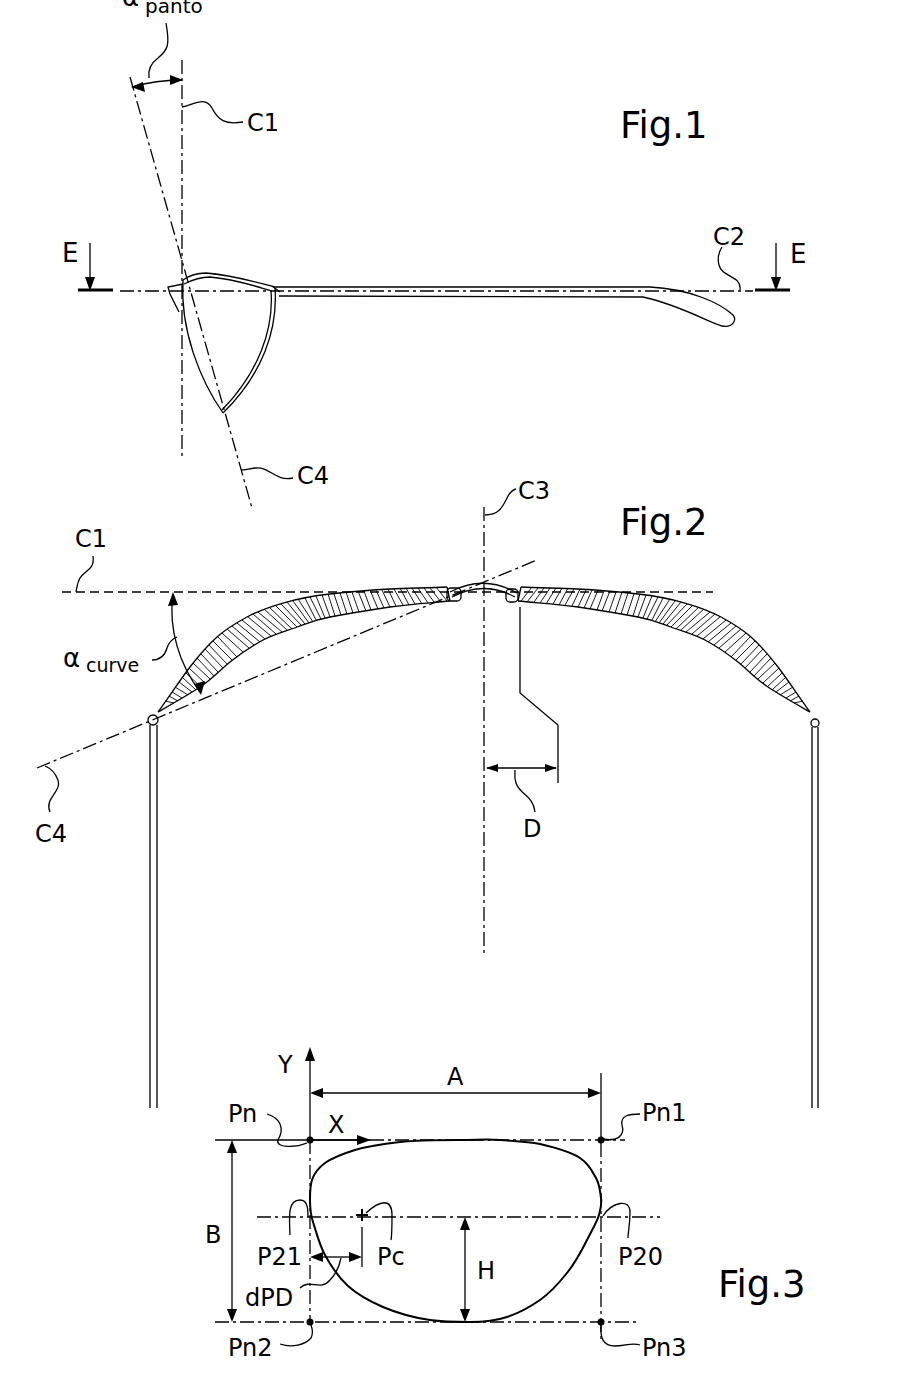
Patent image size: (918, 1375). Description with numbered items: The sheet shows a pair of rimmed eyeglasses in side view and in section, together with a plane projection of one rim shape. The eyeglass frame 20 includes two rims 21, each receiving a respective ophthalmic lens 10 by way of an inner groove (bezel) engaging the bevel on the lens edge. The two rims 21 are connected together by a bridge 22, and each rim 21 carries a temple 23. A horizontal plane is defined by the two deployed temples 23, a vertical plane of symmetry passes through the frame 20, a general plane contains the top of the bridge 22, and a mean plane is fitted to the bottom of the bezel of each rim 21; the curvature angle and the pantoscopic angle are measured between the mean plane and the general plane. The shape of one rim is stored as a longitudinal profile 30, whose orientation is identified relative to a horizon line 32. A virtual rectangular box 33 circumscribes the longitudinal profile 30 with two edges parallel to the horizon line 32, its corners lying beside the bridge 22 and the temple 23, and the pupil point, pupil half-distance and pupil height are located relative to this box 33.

In FIG. 1, the ophthalmic lens 10 is at (240, 355).
In FIG. 2, the ophthalmic lens 10 is at (317, 620).
In FIG. 1, the eyeglass frame 20 is at (464, 276).
In FIG. 2, the eyeglass frame 20 is at (122, 903).
In FIG. 1, the rim 21 is at (254, 285).
In FIG. 2, the rim 21 is at (162, 714).
In FIG. 2, the bridge 22 is at (497, 596).
In FIG. 1, the temple 23 is at (383, 296).
In FIG. 2, the temple 23 is at (157, 792).
In FIG. 3, the longitudinal profile 30 is at (588, 1157).
In FIG. 3, the horizon line 32 is at (655, 1216).
In FIG. 3, the box 33 is at (602, 1298).